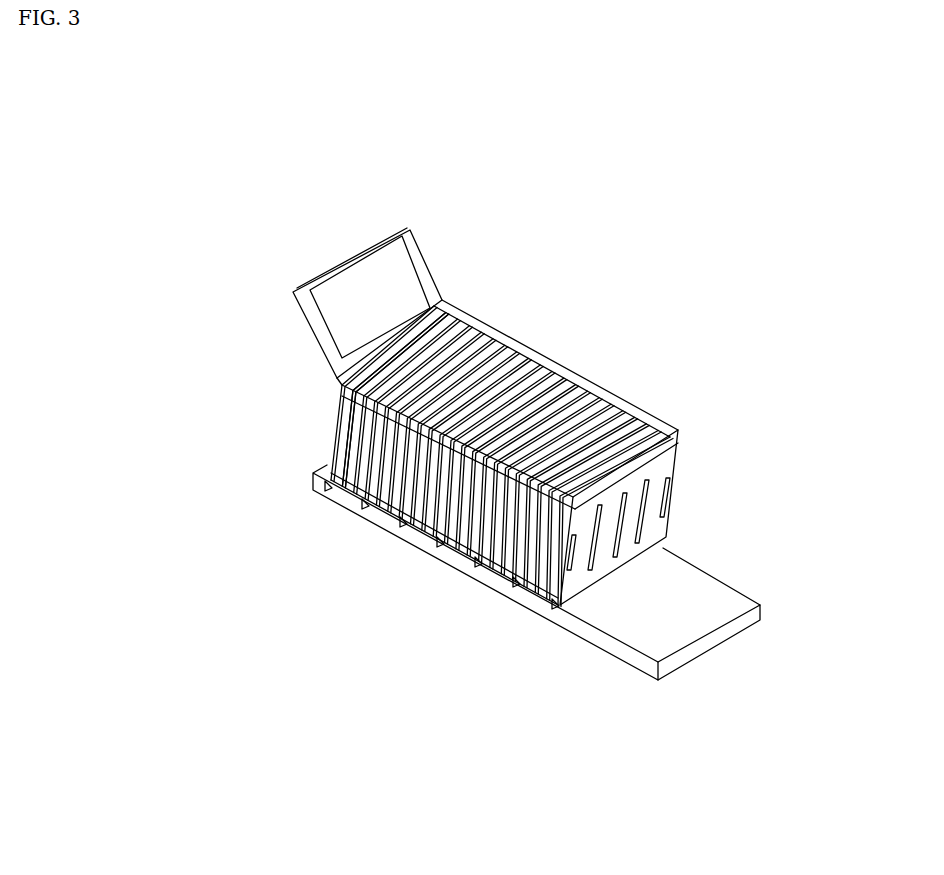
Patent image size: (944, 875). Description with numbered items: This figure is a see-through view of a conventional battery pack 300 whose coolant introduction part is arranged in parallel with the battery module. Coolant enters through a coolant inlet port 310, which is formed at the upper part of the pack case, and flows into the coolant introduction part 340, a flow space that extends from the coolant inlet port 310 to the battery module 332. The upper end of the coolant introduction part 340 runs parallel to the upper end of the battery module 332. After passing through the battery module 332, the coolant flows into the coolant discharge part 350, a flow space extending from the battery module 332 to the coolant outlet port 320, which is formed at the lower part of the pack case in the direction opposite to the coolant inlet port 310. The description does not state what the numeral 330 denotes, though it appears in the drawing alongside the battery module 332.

The battery pack 300 is at (46, 106).
The coolant inlet port 310 is at (418, 236).
The coolant outlet port 320 is at (737, 623).
The heat dissipation fin stack 330 is at (463, 537).
The battery module 332 is at (348, 424).
The coolant introduction part 340 is at (575, 377).
The coolant discharge part 350 is at (562, 628).